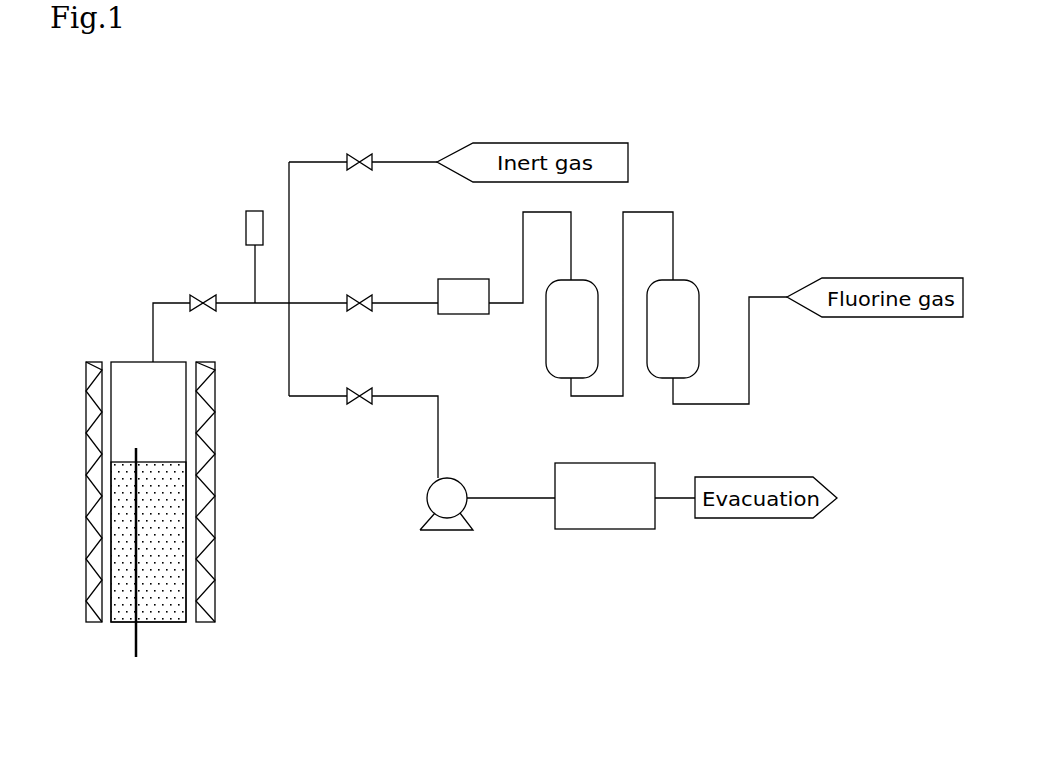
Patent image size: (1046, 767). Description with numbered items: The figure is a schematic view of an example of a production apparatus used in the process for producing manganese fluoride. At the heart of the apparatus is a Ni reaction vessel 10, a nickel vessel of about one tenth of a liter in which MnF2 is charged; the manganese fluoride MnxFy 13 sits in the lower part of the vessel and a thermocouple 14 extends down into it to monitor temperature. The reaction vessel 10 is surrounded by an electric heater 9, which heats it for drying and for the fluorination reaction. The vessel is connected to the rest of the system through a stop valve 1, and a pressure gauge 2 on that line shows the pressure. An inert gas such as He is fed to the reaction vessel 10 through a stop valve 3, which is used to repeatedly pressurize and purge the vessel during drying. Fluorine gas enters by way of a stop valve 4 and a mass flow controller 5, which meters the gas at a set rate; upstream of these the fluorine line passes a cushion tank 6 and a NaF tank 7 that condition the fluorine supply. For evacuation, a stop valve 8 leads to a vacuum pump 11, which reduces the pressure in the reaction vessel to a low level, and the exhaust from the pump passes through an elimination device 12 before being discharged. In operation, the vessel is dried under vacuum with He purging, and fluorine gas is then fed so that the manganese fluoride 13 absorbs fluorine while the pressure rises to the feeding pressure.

The stop valve 1 is at (209, 280).
The pressure gauge 2 is at (235, 240).
The stop valve 3 is at (368, 140).
The stop valve 4 is at (368, 282).
The mass flow controller 5 is at (464, 267).
The cushion tank 6 is at (594, 272).
The NaF tank 7 is at (696, 272).
The stop valve 8 is at (368, 375).
The heater 9 is at (222, 581).
The Ni reaction vessel 10 is at (191, 627).
The vacuum pump 11 is at (456, 542).
The elimination device 12 is at (609, 542).
The MnxFy 13 is at (172, 512).
The thermocouple 14 is at (145, 666).